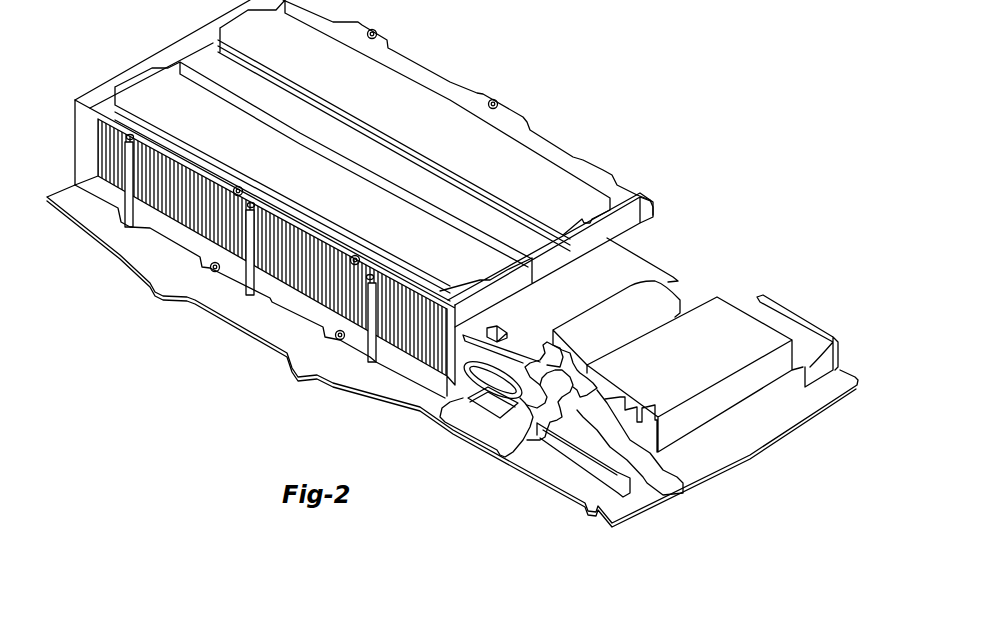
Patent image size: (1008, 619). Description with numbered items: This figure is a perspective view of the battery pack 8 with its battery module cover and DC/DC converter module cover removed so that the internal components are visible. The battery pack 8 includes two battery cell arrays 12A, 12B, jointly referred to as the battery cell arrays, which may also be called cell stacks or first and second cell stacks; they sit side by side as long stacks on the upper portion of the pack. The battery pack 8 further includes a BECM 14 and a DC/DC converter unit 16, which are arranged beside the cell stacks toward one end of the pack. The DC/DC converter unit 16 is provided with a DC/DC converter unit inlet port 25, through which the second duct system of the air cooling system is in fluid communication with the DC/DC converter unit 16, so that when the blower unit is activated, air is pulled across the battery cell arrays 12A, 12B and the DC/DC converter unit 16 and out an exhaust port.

The battery pack 8 is at (531, 49).
The battery cell array 12A is at (150, 84).
The battery cell array 12B is at (403, 110).
The BECM 14 is at (672, 280).
The DC/DC converter unit 16 is at (723, 322).
The DC/DC converter unit inlet port 25 is at (570, 453).